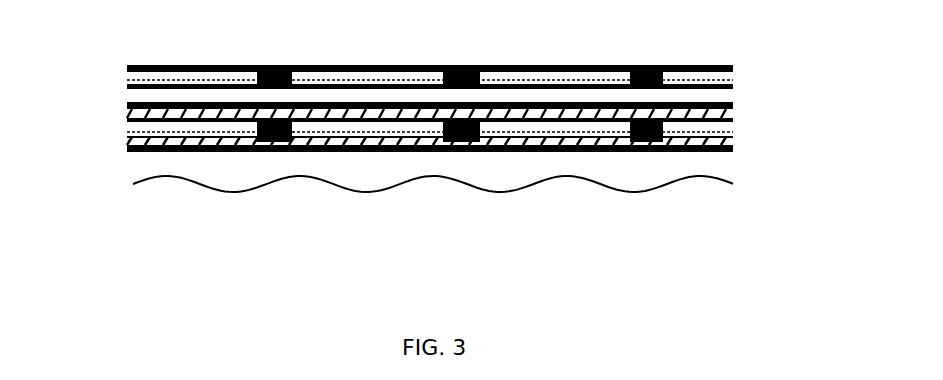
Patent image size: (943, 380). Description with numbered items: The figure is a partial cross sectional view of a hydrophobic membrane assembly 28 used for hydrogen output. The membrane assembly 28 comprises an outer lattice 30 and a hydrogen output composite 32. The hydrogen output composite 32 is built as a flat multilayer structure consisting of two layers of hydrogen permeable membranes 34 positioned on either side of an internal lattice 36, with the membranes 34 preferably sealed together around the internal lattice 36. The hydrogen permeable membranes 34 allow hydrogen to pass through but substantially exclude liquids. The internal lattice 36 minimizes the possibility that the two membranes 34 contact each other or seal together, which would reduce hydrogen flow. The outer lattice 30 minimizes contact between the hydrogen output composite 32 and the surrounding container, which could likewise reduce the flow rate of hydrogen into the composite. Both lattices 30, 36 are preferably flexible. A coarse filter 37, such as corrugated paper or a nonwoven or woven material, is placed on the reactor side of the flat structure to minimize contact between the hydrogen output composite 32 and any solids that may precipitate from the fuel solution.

The membrane assembly 28 is at (47, 70).
The outer lattice 30 is at (732, 85).
The hydrogen output composite 32 is at (103, 102).
The hydrogen permeable membranes 34 is at (732, 112).
The internal lattice 36 is at (707, 133).
The coarse filter 37 is at (675, 180).